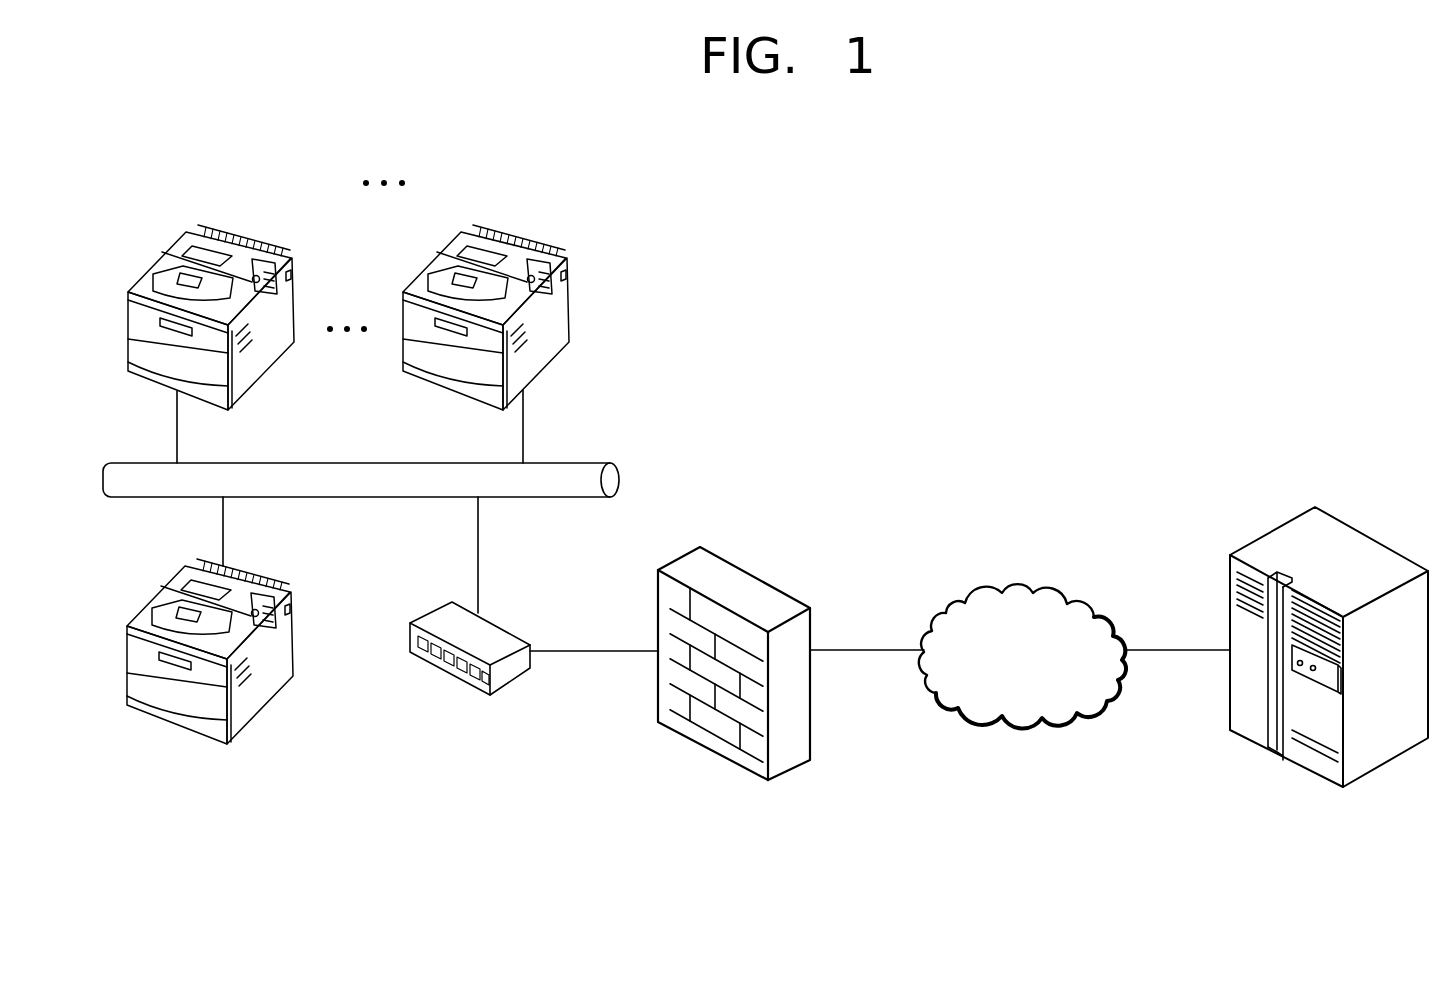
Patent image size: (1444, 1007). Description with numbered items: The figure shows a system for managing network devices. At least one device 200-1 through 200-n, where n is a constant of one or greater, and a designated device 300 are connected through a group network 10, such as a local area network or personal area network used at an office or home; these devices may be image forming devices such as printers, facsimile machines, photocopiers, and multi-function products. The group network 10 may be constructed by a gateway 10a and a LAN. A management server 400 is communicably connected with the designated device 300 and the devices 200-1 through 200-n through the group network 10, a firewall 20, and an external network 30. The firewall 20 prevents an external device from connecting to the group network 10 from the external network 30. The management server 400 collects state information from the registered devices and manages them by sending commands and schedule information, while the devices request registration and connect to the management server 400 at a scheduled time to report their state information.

The device 200-1 is at (250, 230).
The device 200-n is at (524, 230).
The designated device 300 is at (229, 744).
The group network 10 is at (575, 462).
The gateway 10a is at (490, 697).
The firewall 20 is at (768, 782).
The external network 30 is at (1030, 728).
The management server 400 is at (1343, 789).